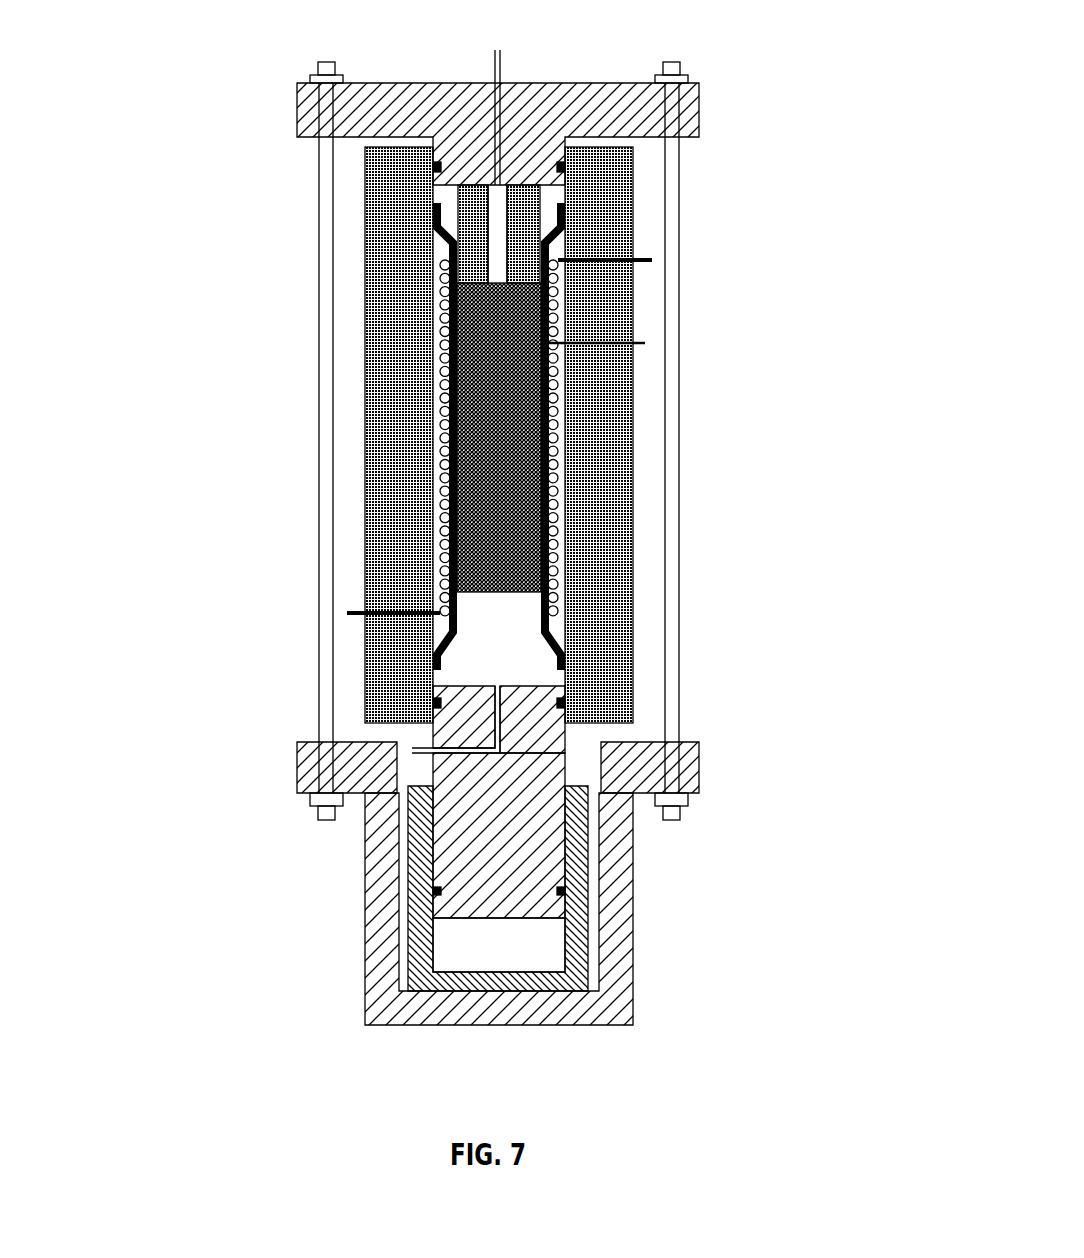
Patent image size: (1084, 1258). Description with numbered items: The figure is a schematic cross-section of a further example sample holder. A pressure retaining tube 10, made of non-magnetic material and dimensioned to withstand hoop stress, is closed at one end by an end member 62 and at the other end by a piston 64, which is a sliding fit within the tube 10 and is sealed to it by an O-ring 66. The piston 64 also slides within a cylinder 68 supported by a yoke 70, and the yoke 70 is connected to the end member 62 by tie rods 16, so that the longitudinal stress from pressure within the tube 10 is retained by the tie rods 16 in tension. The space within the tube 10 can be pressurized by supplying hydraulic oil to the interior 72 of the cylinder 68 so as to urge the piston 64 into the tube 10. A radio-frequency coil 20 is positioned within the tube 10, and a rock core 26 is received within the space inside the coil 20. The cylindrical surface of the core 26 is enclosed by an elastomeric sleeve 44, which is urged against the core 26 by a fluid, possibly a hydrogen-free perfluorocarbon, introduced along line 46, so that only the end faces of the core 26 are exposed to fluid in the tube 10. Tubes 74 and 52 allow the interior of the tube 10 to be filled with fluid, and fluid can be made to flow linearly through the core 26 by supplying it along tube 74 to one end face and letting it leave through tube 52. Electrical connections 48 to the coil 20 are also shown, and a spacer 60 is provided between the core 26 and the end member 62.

The pressure retaining tube 10 is at (372, 480).
The tie rods 16 is at (325, 255).
The radio-frequency coil 20 is at (563, 523).
The rock core 26 is at (468, 463).
The elastomeric sleeve 44 is at (548, 625).
The line 46 is at (645, 343).
The Electrical connections 48 is at (652, 260).
The tube 52 is at (495, 68).
The spacer 60 is at (465, 257).
The end member 62 is at (405, 97).
The piston 64 is at (545, 826).
The O-ring 66 is at (430, 703).
The cylinder 68 is at (411, 918).
The yoke 70 is at (638, 929).
The interior of cylinder 72 is at (533, 955).
The tube 74 is at (503, 712).